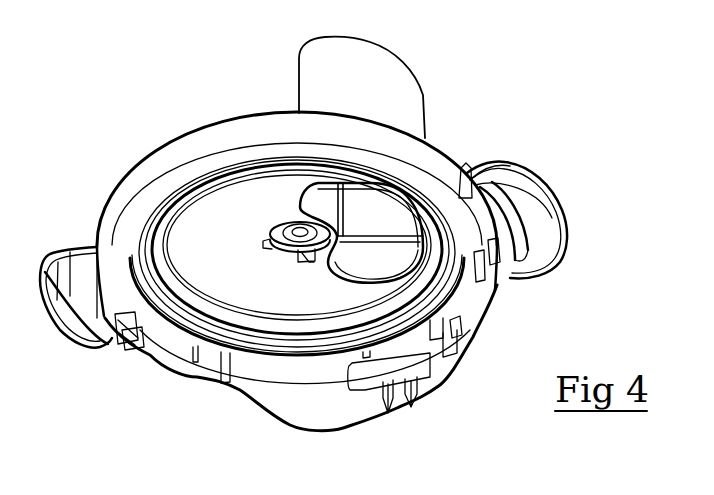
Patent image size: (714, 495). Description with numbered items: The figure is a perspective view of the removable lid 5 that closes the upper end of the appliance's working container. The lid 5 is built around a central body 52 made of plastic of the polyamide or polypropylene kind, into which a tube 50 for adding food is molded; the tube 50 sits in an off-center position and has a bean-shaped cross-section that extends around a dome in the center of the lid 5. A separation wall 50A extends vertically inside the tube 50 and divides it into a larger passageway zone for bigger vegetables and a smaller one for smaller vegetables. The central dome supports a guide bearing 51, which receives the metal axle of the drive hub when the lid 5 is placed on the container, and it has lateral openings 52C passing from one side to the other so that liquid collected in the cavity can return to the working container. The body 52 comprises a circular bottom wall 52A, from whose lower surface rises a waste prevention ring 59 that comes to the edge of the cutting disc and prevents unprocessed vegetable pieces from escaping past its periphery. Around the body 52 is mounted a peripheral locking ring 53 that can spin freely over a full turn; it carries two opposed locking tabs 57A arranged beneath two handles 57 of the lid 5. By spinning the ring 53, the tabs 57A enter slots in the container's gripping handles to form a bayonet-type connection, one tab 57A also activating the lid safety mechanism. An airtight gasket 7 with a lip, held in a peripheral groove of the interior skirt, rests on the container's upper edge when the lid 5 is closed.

The lid 5 is at (624, 185).
The airtight gasket 7 is at (456, 312).
The tube 50 is at (306, 78).
The separation wall 50A is at (380, 231).
The guide bearing 51 is at (296, 228).
The central body 52 is at (284, 348).
The circular bottom wall 52A is at (240, 297).
The lateral openings 52C is at (310, 264).
The peripheral locking ring 53 is at (171, 161).
The handles 57 is at (56, 248).
The locking tabs 57A is at (119, 345).
The waste prevention ring 59 is at (166, 226).